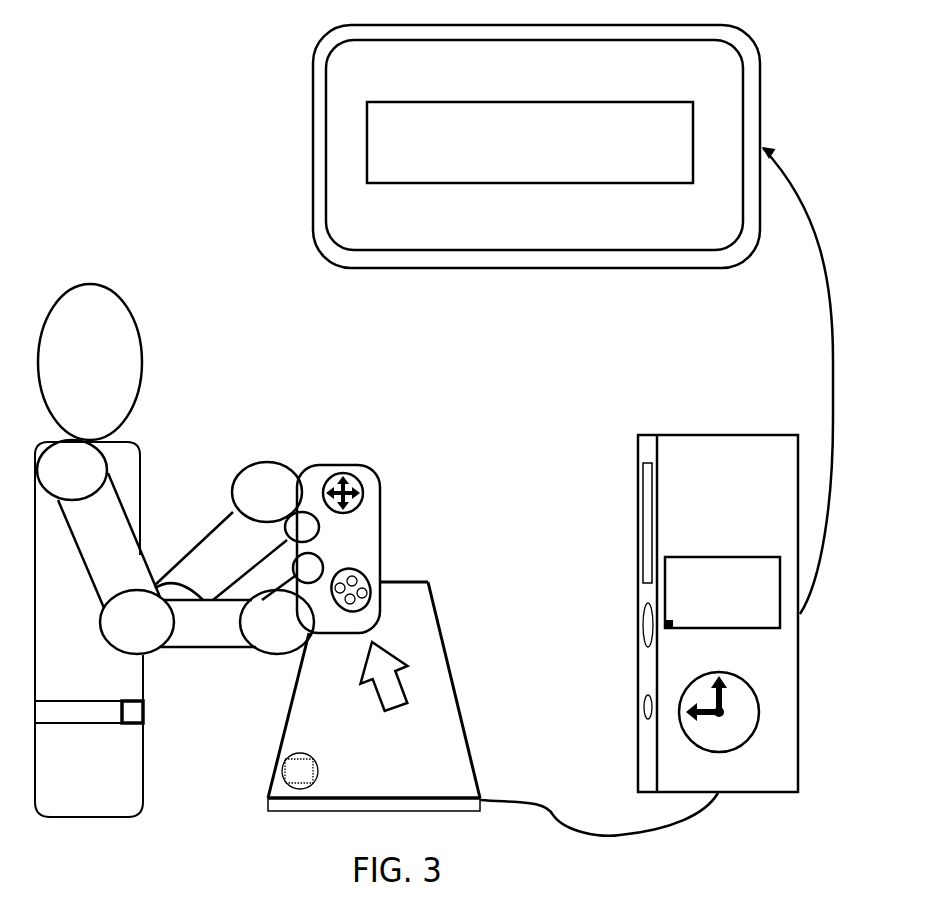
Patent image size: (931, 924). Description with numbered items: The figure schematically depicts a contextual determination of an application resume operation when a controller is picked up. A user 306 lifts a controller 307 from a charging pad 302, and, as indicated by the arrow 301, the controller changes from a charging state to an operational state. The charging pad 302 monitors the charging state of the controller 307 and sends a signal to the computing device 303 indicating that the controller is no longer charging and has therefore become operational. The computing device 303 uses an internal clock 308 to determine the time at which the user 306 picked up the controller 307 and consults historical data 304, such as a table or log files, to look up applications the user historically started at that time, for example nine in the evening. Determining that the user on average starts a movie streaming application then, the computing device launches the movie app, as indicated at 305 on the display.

The arrow 301 is at (394, 664).
The charging pad 302 is at (431, 587).
The computing device 303 is at (714, 488).
The historical data 304 is at (730, 557).
The application launch indication 305 is at (641, 101).
The user 306 is at (132, 307).
The controller 307 is at (380, 524).
The internal clock 308 is at (775, 670).